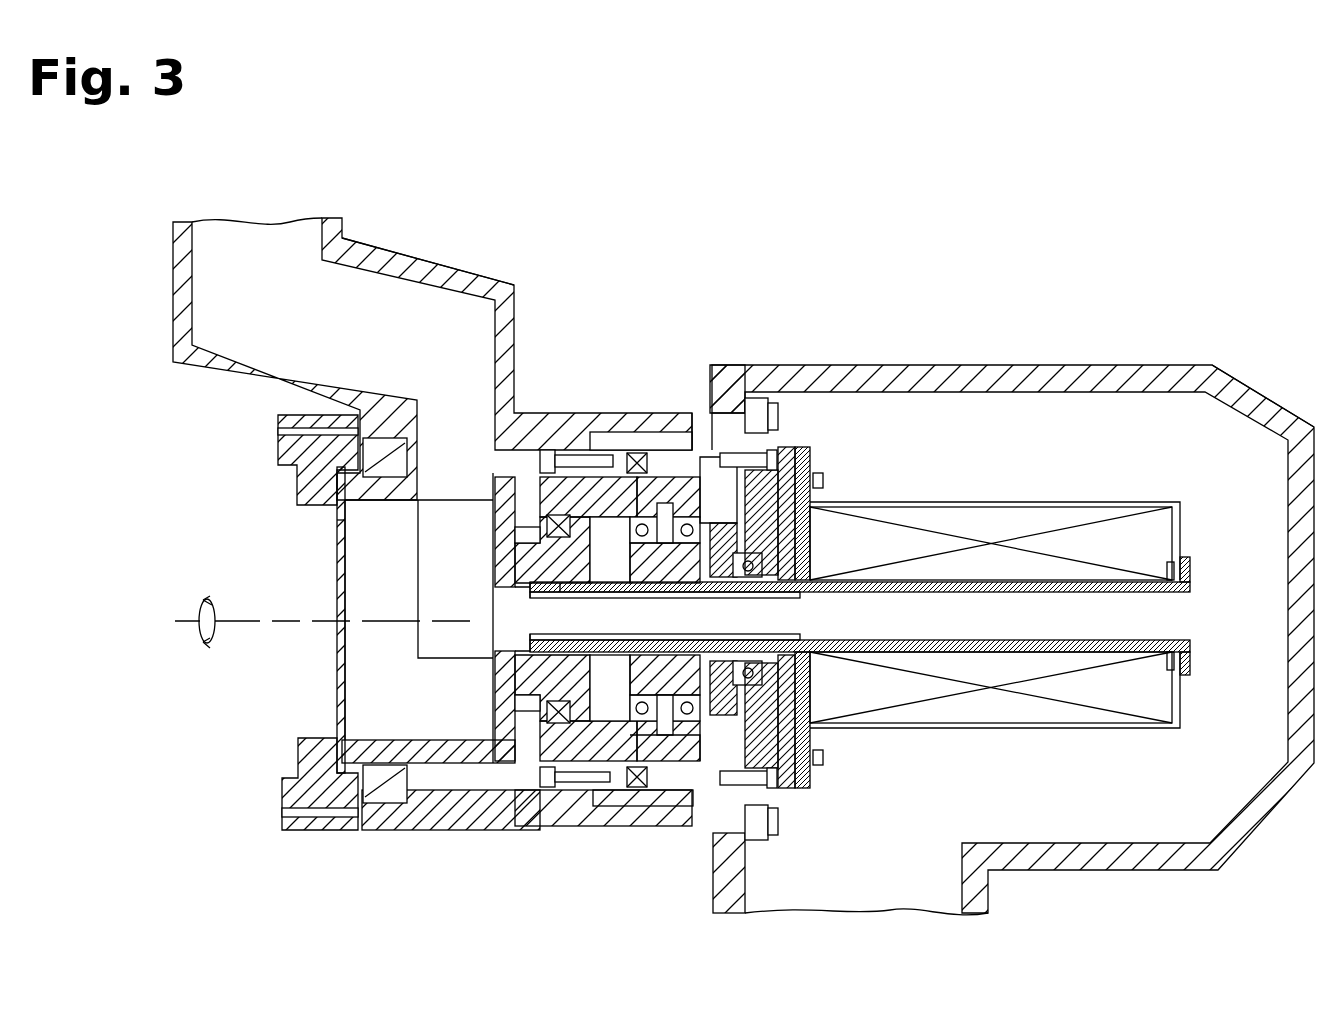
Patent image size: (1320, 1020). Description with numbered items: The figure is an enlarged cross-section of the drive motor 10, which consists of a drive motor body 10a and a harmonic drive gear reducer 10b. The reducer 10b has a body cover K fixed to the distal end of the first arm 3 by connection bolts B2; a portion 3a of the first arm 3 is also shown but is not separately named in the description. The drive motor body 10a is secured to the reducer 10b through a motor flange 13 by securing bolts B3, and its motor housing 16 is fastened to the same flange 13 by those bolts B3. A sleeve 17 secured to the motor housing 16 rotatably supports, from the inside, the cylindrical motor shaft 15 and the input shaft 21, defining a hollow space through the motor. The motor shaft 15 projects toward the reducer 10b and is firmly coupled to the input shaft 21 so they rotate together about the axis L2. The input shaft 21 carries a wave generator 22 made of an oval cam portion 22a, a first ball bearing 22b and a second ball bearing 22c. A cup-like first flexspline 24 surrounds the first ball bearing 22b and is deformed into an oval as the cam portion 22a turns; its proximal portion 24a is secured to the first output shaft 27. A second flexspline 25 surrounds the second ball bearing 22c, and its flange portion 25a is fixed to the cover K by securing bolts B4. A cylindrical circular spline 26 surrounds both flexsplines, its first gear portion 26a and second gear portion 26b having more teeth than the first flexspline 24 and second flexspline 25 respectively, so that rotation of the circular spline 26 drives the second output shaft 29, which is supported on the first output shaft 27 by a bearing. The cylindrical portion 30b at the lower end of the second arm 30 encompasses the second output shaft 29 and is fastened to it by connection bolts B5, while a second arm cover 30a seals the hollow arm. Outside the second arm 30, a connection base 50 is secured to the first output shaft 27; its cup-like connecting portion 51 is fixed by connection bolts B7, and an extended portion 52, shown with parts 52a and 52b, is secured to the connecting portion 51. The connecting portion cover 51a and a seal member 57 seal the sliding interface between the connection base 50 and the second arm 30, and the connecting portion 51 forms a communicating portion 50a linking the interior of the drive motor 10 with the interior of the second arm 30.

The first arm 3 is at (932, 382).
The housing inclined wall 3a is at (1012, 368).
The drive motor 10 is at (953, 405).
The drive motor body 10a is at (918, 491).
The harmonic drive gear reducer 10b is at (884, 427).
The motor flange 13 is at (812, 458).
The motor shaft 15 is at (1063, 592).
The motor housing 16 is at (1030, 502).
The sleeve 17 is at (1192, 571).
The input shaft 21 is at (712, 594).
The wave generator 22 is at (631, 593).
The cam portion 22a is at (672, 594).
The first ball bearing 22b is at (617, 550).
The second ball bearing 22c is at (743, 550).
The first flexspline 24 is at (598, 592).
The proximal portion 24a is at (560, 592).
The second flexspline 25 is at (720, 490).
The flange portion 25a is at (770, 619).
The circular spline 26 is at (668, 762).
The first gear portion 26a is at (615, 688).
The second gear portion 26b is at (728, 718).
The first output shaft 27 is at (516, 590).
The second output shaft 29 is at (614, 432).
The second arm 30 is at (516, 334).
The second arm cover 30a is at (466, 272).
The cylindrical portion 30b is at (654, 412).
The connection base 50 is at (295, 665).
The communicating portion 50a is at (423, 540).
The connecting portion 51 is at (496, 718).
The connecting portion cover 51a is at (334, 520).
The extended portion 52 is at (275, 748).
The flange groove 52a is at (282, 796).
The flange upper portion 52b is at (280, 452).
The seal member 57 is at (386, 798).
The connection bolts B2 is at (780, 410).
The securing bolts B3 is at (824, 481).
The securing bolts B4 is at (775, 460).
The connection bolts B5 is at (540, 462).
The connection bolts B7 is at (514, 536).
The body cover K is at (700, 425).
The axis L2 is at (246, 620).